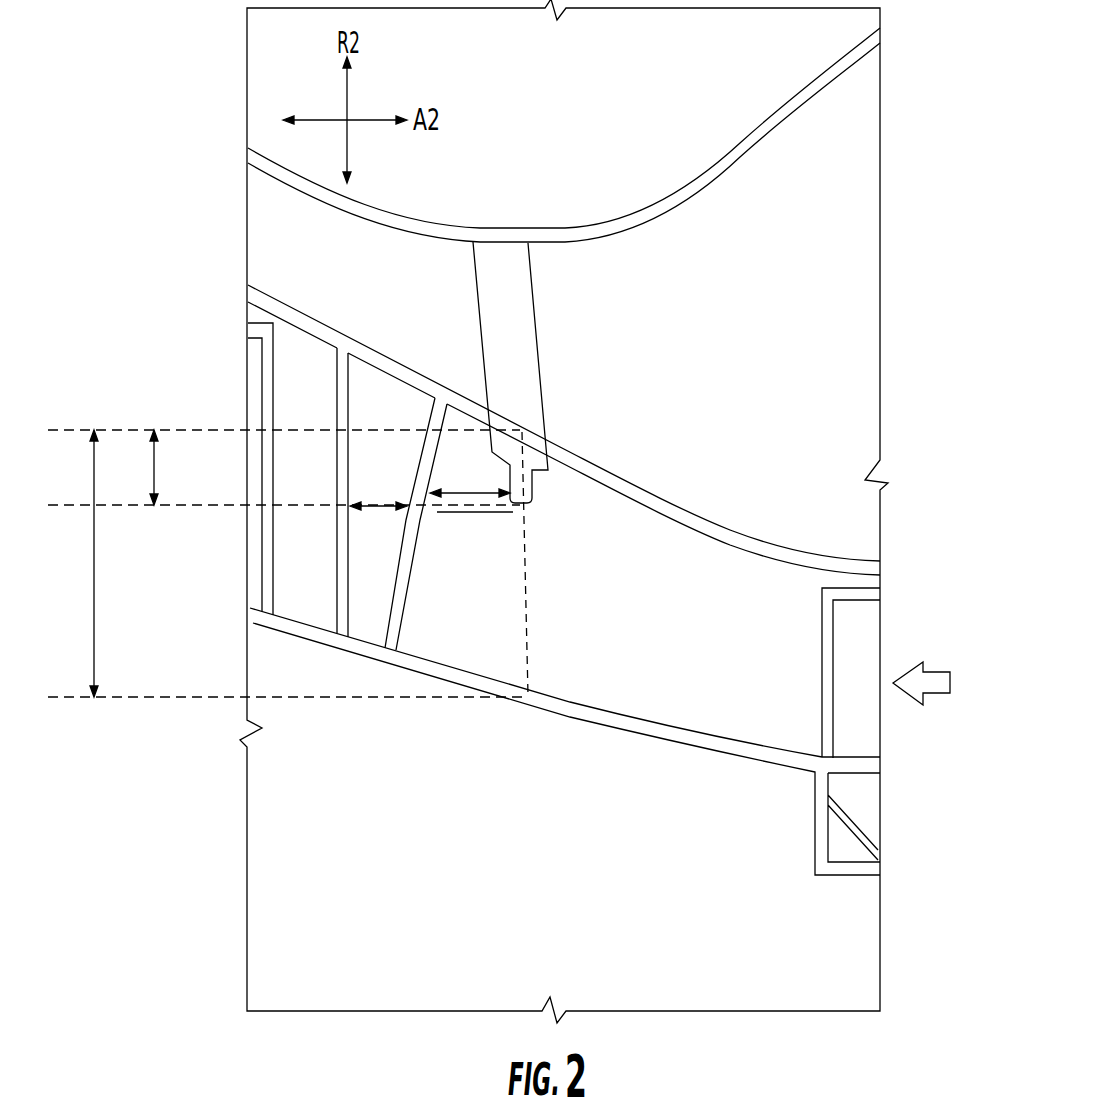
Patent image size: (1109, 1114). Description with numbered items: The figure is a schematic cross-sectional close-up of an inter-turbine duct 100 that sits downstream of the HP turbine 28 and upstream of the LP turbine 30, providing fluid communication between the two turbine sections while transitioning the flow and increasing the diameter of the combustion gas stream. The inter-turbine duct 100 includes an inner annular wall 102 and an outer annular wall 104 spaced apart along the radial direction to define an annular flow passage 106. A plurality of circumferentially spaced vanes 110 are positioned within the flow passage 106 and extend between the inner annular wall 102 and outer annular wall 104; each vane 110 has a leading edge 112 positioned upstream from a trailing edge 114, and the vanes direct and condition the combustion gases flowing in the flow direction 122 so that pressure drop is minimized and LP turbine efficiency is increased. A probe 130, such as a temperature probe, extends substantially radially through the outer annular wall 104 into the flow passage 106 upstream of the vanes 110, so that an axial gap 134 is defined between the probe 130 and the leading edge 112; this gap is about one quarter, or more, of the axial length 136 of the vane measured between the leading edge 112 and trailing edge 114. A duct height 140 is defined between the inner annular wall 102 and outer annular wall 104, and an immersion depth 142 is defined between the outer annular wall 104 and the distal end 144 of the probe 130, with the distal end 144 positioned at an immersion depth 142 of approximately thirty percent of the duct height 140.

The HP turbine 28 is at (847, 847).
The LP turbine 30 is at (250, 588).
The inter-turbine duct 100 is at (565, 692).
The inner annular wall 102 is at (607, 725).
The outer annular wall 104 is at (733, 537).
The annular flow passage 106 is at (811, 716).
The vane 110 is at (357, 603).
The leading edge 112 is at (431, 524).
The trailing edge 114 is at (257, 388).
The flow direction 122 is at (932, 683).
The probe 130 is at (515, 370).
The axial gap 134 is at (478, 492).
The axial length 136 is at (378, 505).
The duct height 140 is at (95, 538).
The immersion depth 142 is at (155, 477).
The distal end 144 is at (556, 563).